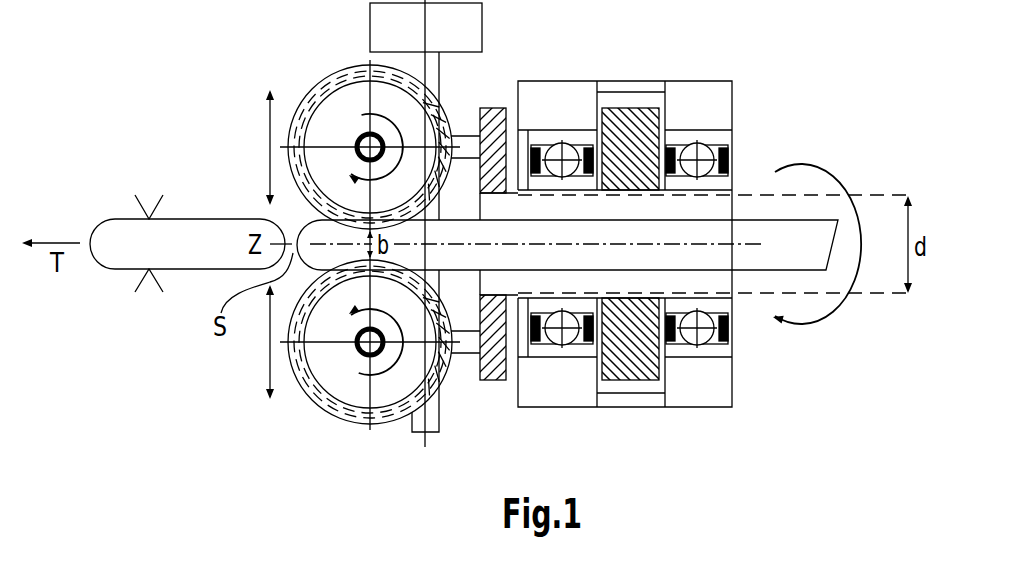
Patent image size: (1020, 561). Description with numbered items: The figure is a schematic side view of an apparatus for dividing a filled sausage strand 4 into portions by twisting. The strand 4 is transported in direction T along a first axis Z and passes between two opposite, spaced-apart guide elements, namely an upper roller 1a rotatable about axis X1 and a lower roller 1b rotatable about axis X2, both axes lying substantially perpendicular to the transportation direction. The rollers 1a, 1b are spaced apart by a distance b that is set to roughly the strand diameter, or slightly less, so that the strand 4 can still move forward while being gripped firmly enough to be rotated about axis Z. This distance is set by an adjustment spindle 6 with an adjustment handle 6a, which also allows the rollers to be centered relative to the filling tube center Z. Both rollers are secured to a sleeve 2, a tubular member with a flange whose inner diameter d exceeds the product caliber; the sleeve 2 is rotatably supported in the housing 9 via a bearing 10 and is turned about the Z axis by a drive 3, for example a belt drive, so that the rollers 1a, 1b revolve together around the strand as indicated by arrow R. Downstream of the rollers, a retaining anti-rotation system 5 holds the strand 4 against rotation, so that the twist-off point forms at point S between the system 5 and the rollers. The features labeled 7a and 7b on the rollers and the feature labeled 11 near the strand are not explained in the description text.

The upper roller 1a is at (332, 73).
The lower roller 1b is at (330, 416).
The sleeve 2 is at (495, 109).
The drive 3 is at (633, 105).
The filled sausage strand 4 is at (823, 243).
The retaining anti-rotation system 5 is at (140, 291).
The adjustment spindle 6 is at (424, 442).
The adjustment handle 6a is at (482, 33).
The upper roller lining 7a is at (353, 138).
The lower roller lining 7b is at (304, 390).
The housing 9 is at (700, 96).
The bearing 10 is at (733, 182).
The rotation of rod 11 is at (775, 208).